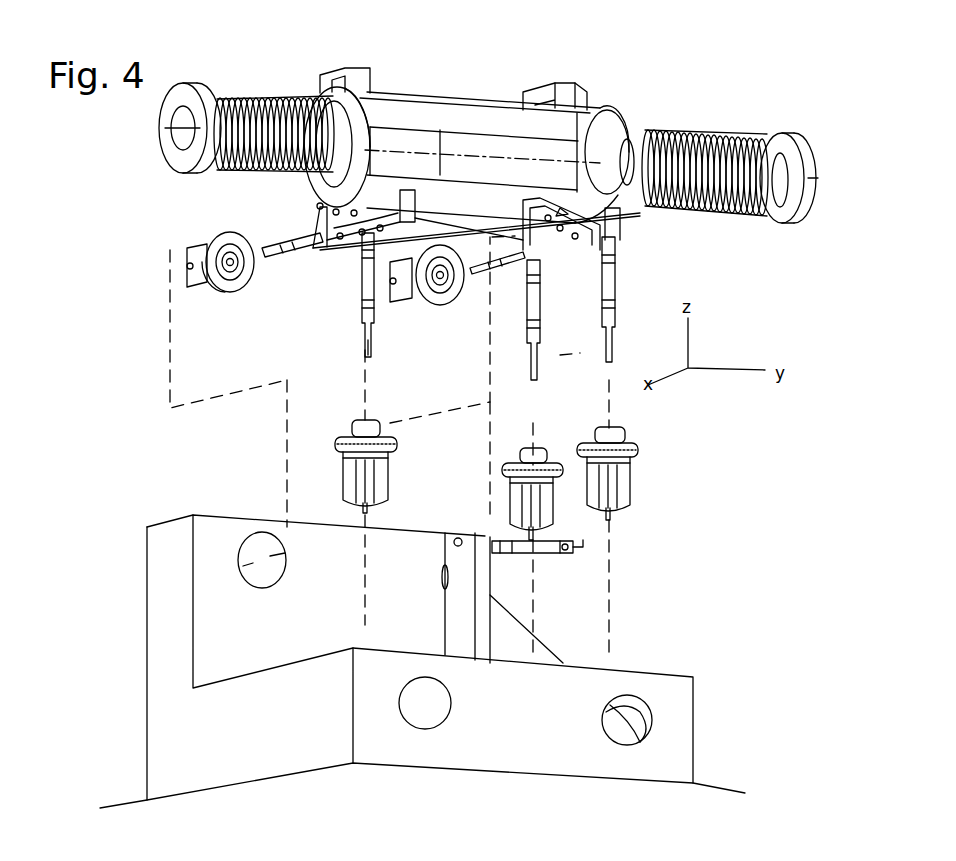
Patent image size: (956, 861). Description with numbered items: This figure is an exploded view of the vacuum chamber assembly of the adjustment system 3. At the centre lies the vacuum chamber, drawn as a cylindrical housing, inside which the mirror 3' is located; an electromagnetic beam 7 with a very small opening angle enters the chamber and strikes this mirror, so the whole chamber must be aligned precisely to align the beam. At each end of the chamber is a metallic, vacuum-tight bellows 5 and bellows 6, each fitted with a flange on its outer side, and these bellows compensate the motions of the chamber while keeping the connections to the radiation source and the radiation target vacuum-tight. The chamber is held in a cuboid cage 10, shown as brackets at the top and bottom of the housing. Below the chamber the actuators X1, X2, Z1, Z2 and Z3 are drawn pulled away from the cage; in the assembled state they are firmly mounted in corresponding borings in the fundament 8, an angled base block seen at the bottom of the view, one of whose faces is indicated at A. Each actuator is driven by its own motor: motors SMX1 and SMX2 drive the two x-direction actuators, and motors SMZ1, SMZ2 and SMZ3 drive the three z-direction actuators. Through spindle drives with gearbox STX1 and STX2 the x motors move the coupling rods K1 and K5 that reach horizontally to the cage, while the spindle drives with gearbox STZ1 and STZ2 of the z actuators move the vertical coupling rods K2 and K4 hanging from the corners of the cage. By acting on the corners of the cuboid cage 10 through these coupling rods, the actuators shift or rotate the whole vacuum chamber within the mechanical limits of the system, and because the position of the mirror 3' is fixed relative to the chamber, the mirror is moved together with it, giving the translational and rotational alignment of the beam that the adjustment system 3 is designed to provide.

The adjustment system 3 is at (469, 117).
The mirror 3' is at (461, 120).
The bellows 5 is at (263, 95).
The bellows 6 is at (695, 135).
The electromagnetic beam 7 is at (165, 125).
The cage 10 is at (362, 68).
The fundament 8 is at (170, 565).
The support column A is at (460, 578).
The actuator X1 is at (172, 265).
The actuator X2 is at (451, 315).
The motor SMX1 is at (187, 263).
The motor SMX2 is at (400, 300).
The spindle drive with gearbox STX1 is at (235, 288).
The spindle drive with gearbox STX2 is at (470, 308).
The coupling rod K1 is at (298, 254).
The coupling rod K2 is at (507, 265).
The coupling rod K4 is at (607, 285).
The coupling rod K5 is at (367, 268).
The actuator Z1 is at (524, 518).
The actuator Z2 is at (644, 493).
The actuator Z3 is at (301, 456).
The spindle drive with gearbox STZ1 is at (363, 422).
The spindle drive with gearbox STZ2 is at (627, 434).
The motor SMZ1 is at (515, 503).
The motor SMZ2 is at (627, 492).
The motor SMZ3 is at (340, 478).